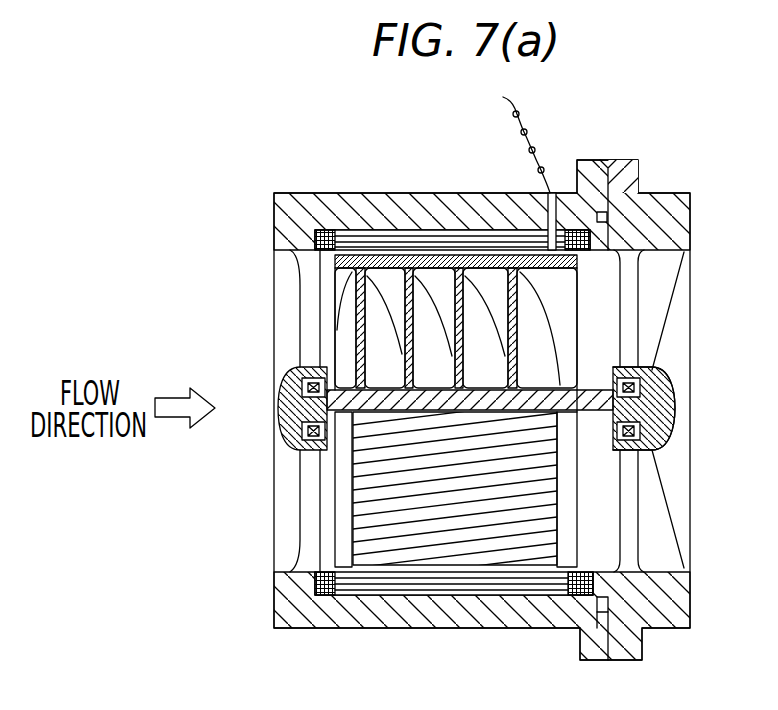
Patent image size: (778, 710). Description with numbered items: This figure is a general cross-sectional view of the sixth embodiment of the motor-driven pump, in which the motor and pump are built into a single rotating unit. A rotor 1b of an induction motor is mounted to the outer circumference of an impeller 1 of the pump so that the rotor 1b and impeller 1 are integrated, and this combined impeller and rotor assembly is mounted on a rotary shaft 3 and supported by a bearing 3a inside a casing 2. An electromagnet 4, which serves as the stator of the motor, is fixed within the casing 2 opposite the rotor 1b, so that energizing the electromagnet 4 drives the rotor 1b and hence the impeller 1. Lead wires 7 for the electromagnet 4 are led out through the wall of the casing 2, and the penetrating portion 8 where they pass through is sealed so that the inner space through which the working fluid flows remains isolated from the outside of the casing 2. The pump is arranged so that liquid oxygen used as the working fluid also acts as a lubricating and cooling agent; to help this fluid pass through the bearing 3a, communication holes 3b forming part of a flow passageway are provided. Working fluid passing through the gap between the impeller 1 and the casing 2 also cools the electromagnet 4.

The impeller 1 is at (490, 327).
The rotor 1b is at (412, 547).
The casing 2 is at (275, 193).
The rotary shaft 3 is at (660, 416).
The bearing 3a is at (650, 372).
The communication holes 3b is at (275, 382).
The electromagnet 4 is at (460, 247).
The lead wires 7 is at (524, 122).
The penetrating portion 8 is at (553, 192).